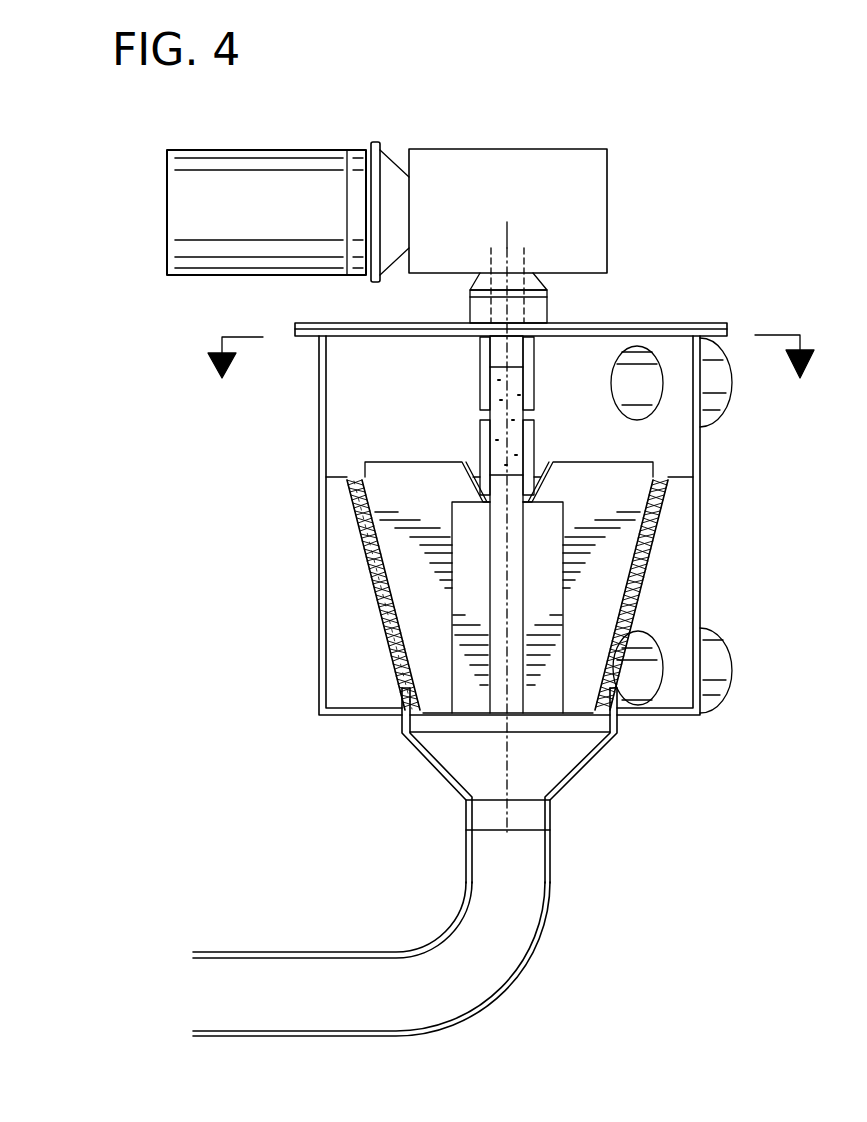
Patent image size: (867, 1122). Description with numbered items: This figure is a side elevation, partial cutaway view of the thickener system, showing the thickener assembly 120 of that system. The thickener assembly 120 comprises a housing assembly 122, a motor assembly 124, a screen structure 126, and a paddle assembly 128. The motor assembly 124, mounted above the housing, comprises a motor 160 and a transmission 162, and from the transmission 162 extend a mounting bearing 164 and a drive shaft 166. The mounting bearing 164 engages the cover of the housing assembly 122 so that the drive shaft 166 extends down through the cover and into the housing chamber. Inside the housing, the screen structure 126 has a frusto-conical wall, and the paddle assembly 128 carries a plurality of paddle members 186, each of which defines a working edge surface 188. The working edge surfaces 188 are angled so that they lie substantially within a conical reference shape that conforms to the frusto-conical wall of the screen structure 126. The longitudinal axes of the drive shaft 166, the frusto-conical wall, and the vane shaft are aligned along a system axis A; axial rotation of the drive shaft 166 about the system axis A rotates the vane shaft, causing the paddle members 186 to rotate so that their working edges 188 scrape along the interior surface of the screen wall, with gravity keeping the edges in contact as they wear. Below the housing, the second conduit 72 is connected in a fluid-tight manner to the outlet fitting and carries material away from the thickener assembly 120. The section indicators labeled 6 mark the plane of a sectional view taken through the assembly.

The motor 160 is at (181, 203).
The motor assembly 124 is at (339, 114).
The transmission 162 is at (547, 163).
The thickener assembly 120 is at (664, 145).
The system axis A is at (510, 232).
The mounting bearing 164 is at (537, 299).
The drive shaft 166 is at (515, 352).
The paddle assembly 128 is at (466, 382).
The housing assembly 122 is at (315, 456).
The screen structure 126 is at (366, 583).
The paddle members 186 is at (415, 603).
The working edge surfaces 188 is at (425, 635).
The second conduit 72 is at (324, 970).
The section line 6- 6 is at (511, 371).